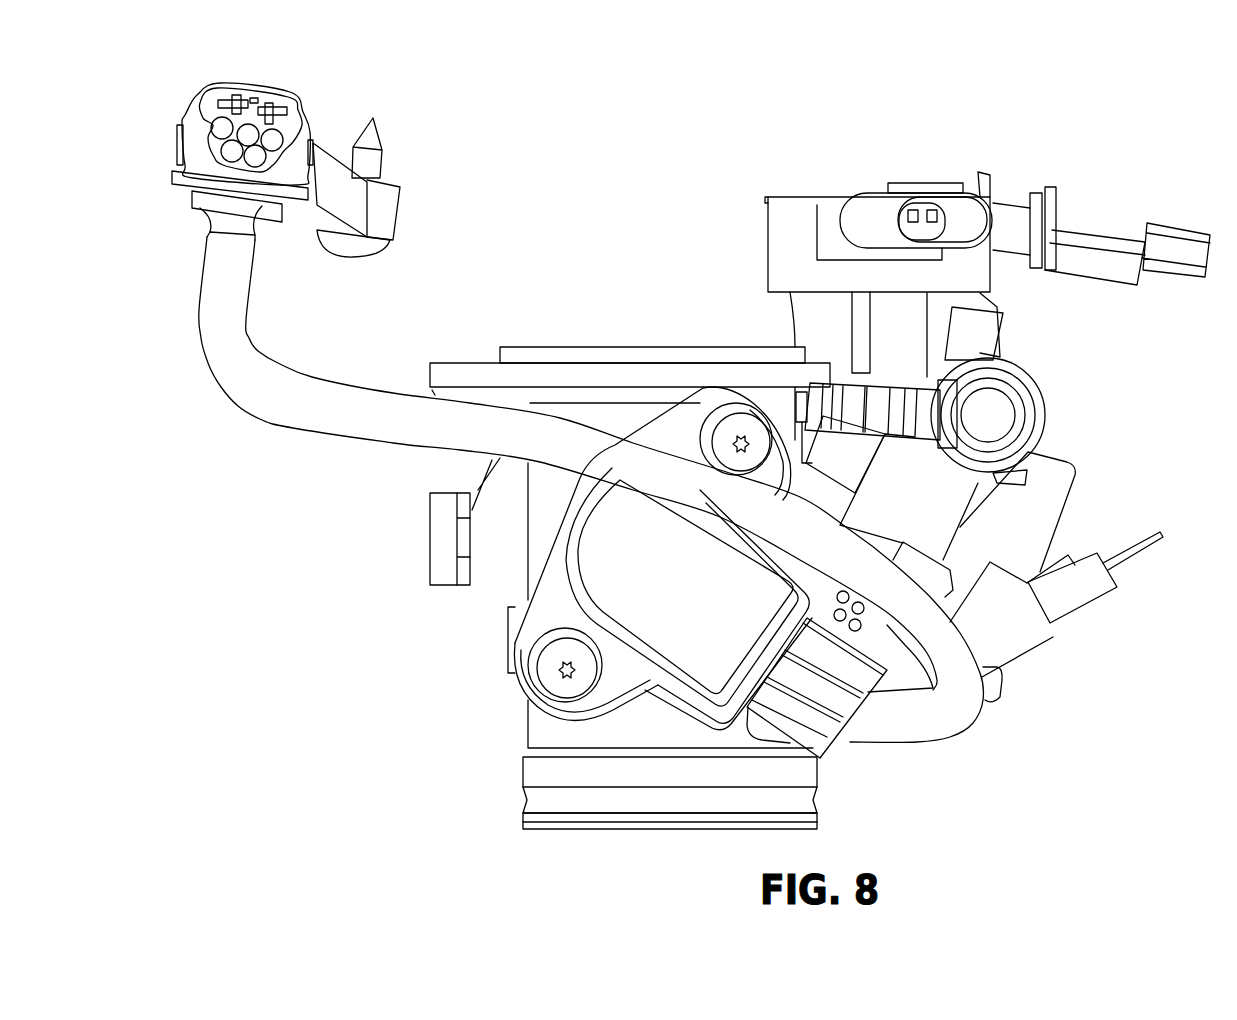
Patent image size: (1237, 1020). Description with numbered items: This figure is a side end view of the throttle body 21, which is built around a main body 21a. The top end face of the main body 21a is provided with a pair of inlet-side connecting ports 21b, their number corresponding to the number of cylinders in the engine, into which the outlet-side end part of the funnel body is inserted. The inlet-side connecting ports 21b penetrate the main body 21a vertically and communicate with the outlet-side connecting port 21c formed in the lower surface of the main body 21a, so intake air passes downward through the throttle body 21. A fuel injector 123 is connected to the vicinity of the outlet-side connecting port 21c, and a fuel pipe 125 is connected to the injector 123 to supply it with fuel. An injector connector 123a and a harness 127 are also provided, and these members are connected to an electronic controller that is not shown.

The throttle body 21 is at (978, 128).
The main body 21a is at (548, 725).
The inlet-side connecting port 21b is at (665, 347).
The outlet-side connecting port 21c is at (670, 830).
The fuel injector 123 is at (1010, 637).
The injector connector 123a is at (1077, 592).
The fuel pipe 125 is at (988, 417).
The harness 127 is at (580, 440).